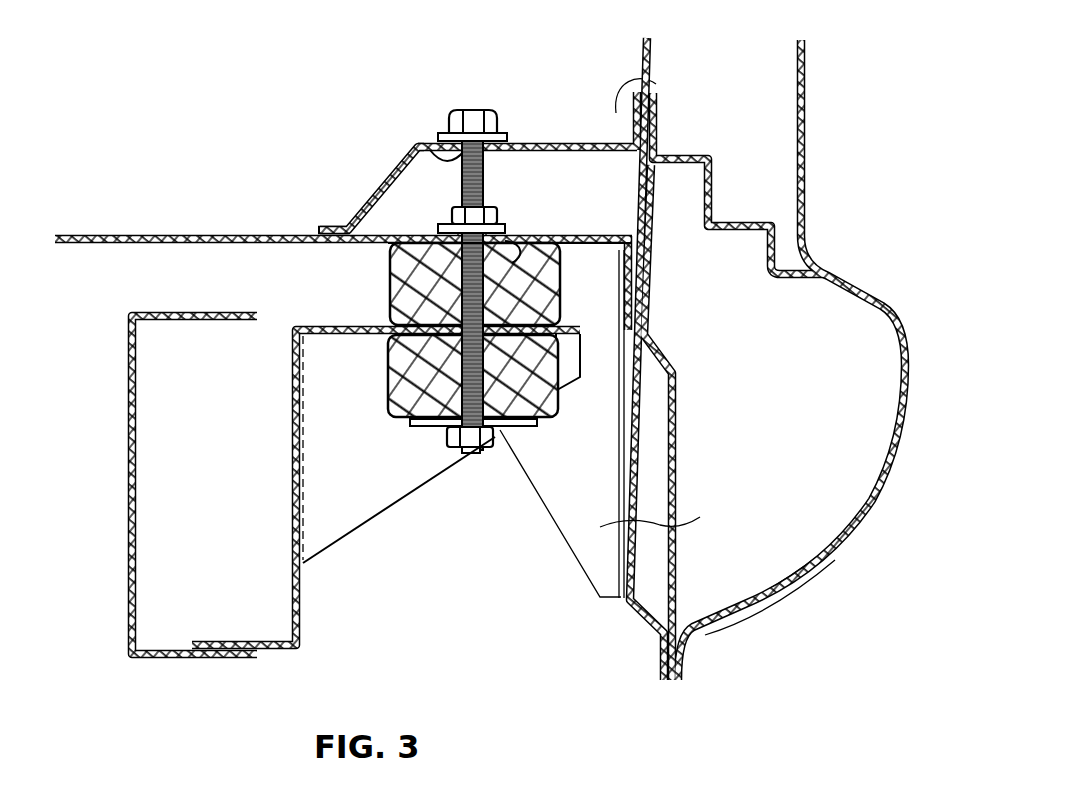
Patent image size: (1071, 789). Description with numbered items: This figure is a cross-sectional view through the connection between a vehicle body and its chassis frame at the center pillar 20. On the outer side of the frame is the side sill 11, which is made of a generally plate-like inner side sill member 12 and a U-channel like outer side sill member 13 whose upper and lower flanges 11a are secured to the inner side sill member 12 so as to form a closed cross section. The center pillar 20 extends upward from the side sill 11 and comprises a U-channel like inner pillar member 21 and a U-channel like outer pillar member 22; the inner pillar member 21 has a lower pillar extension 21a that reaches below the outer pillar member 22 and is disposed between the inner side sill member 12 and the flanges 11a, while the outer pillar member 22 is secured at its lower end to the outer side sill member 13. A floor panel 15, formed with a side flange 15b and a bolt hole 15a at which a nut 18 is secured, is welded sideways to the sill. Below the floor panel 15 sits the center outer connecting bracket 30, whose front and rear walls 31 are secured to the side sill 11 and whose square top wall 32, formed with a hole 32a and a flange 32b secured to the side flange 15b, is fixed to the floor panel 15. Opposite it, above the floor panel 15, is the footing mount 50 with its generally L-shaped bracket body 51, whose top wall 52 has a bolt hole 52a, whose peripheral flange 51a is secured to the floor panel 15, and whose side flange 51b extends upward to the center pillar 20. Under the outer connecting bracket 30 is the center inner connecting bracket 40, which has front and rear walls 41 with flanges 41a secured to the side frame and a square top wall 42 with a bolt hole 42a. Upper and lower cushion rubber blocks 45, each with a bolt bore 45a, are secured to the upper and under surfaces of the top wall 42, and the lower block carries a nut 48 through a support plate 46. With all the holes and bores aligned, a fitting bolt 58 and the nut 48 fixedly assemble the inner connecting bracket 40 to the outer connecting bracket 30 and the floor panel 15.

The side sill 11 is at (767, 636).
The upper and lower flanges 11a is at (655, 132).
The inner side sill member 12 is at (754, 678).
The outer side sill member 13 is at (723, 683).
The floor panel 15 is at (203, 234).
The bolt hole 15a is at (483, 222).
The side flange 15b is at (623, 285).
The nut 18 is at (452, 214).
The center pillar 20 is at (767, 341).
The inner pillar member 21 is at (650, 62).
The lower pillar extension 21a is at (680, 443).
The outer pillar member 22 is at (800, 87).
The outer connecting bracket 30 is at (559, 419).
The front and rear walls 31 is at (665, 511).
The top wall 32 is at (590, 247).
The hole 32a is at (519, 258).
The flange 32b is at (619, 300).
The inner connecting bracket 40 is at (359, 349).
The front and rear walls 41 is at (320, 433).
The flange 41a is at (306, 462).
The top wall 42 is at (325, 325).
The bolt hole 42a is at (455, 342).
The cushion rubber block 45 is at (556, 418).
The bolt bore 45a is at (442, 432).
The support plate 46 is at (513, 425).
The nut 48 is at (470, 470).
The footing mount 50 is at (494, 131).
The bracket body 51 is at (413, 150).
The peripheral flange 51a is at (323, 228).
The side flange 51b is at (648, 82).
The top wall 52 is at (588, 143).
The bolt hole 52a is at (440, 150).
The fitting bolt 58 is at (478, 110).